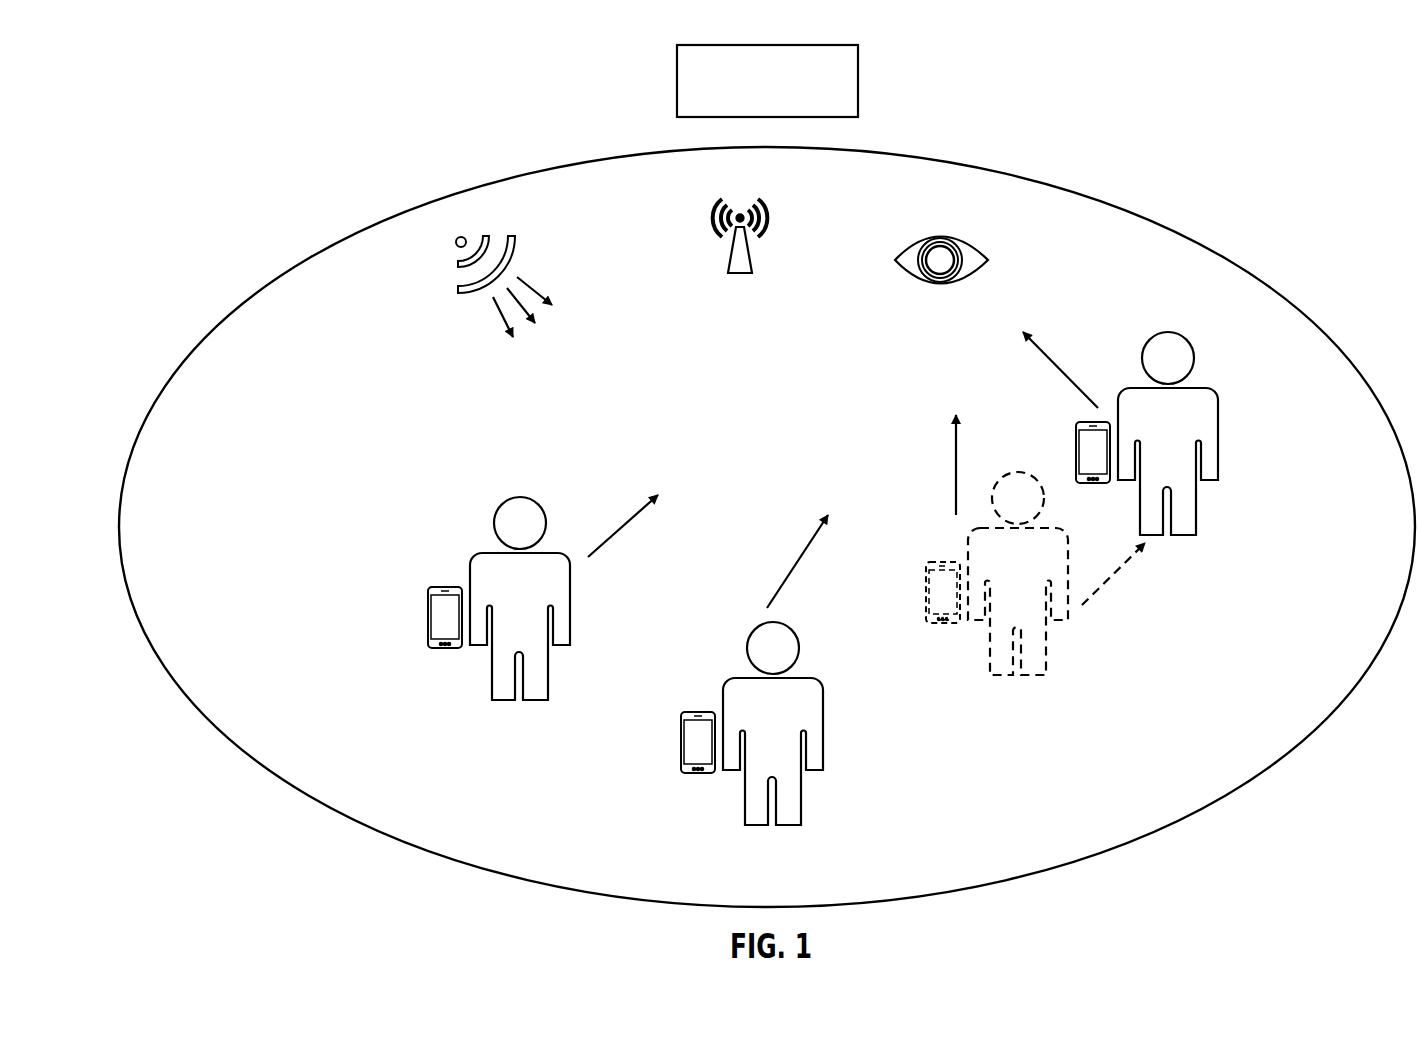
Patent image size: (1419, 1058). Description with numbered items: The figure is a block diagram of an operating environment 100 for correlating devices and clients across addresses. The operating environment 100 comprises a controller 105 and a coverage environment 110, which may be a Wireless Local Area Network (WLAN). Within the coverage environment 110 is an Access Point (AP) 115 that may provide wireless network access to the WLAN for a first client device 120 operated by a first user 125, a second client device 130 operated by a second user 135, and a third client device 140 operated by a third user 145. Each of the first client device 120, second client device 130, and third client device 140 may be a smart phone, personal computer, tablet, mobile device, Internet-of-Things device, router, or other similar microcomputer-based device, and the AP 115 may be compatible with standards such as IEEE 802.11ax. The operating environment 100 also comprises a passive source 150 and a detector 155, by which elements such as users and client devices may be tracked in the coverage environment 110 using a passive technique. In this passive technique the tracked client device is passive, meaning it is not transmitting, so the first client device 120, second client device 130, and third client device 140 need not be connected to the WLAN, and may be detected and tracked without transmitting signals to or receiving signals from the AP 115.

The operating environment 100 is at (240, 93).
The controller 105 is at (858, 82).
The coverage environment 110 is at (1305, 317).
The access point (AP) 115 is at (752, 262).
The first client device 120 is at (427, 618).
The first user 125 is at (476, 558).
The second client device 130 is at (681, 742).
The second user 135 is at (728, 683).
The third client device 140 is at (926, 593).
The third user 145 is at (973, 533).
The passive source 150 is at (457, 290).
The detector 155 is at (968, 243).